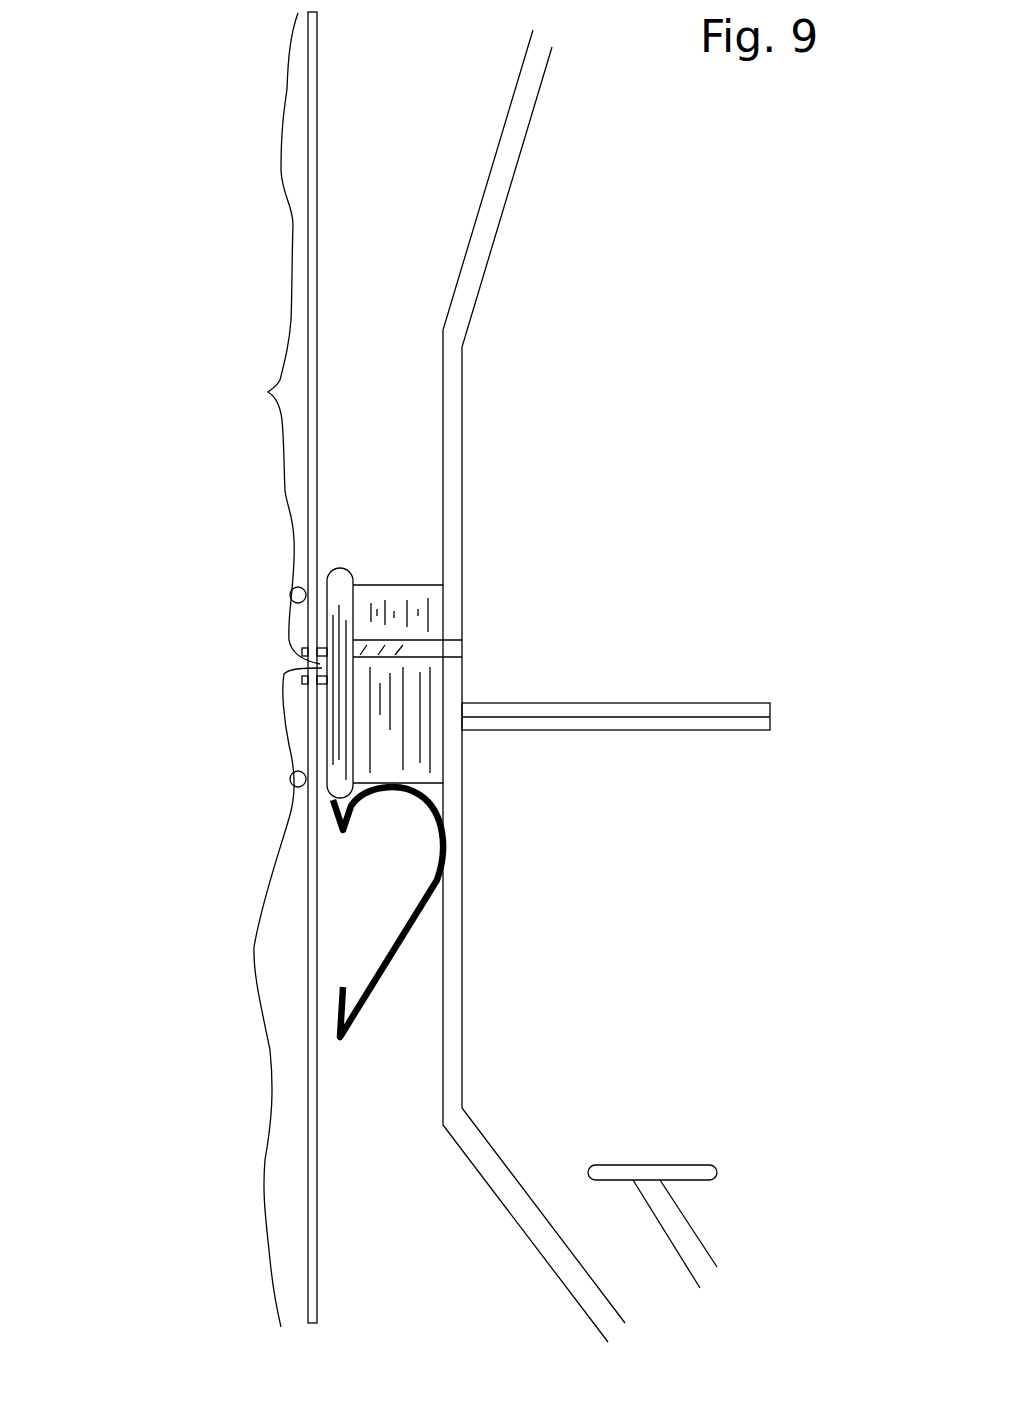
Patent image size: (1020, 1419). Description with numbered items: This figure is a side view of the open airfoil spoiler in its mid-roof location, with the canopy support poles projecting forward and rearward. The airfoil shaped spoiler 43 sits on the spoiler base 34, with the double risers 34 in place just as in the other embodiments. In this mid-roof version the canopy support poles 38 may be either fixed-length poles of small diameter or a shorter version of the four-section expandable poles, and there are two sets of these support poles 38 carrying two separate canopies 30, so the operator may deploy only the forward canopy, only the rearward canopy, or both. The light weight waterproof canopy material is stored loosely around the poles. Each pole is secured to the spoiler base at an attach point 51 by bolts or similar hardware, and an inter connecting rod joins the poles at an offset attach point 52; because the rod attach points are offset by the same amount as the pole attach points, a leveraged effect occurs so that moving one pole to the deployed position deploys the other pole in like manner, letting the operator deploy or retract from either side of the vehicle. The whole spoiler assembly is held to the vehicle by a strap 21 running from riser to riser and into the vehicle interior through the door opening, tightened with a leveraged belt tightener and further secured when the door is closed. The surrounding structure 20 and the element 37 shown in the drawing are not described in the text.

The frame 20 is at (475, 263).
The strap 21 is at (413, 648).
The canopy 30 is at (268, 389).
The spoiler base 34 is at (390, 761).
The capsule member 37 is at (340, 593).
The canopy support pole 38 is at (315, 263).
The airfoil shaped spoiler 43 is at (397, 935).
The attach point 51 is at (302, 653).
The attach point of inter connecting rod 52 is at (290, 595).